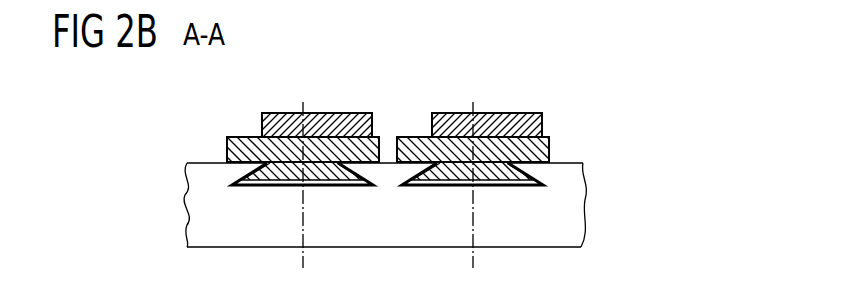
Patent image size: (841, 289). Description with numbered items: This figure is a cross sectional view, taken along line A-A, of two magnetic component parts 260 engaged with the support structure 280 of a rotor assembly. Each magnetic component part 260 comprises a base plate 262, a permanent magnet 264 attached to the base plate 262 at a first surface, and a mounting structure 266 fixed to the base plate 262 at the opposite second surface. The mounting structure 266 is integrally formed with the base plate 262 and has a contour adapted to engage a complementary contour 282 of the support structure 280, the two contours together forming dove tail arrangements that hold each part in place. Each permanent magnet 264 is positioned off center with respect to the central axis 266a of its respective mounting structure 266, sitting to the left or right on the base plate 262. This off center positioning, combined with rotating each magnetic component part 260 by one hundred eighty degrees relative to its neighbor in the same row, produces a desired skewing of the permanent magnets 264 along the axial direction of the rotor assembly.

The magnetic component part 260 is at (397, 152).
The base plate 262 is at (555, 138).
The permanent magnet 264 is at (337, 122).
The mounting structure 266 is at (558, 185).
The central axis 266a is at (473, 222).
The support structure 280 is at (573, 217).
The complementary contour 282 is at (235, 177).